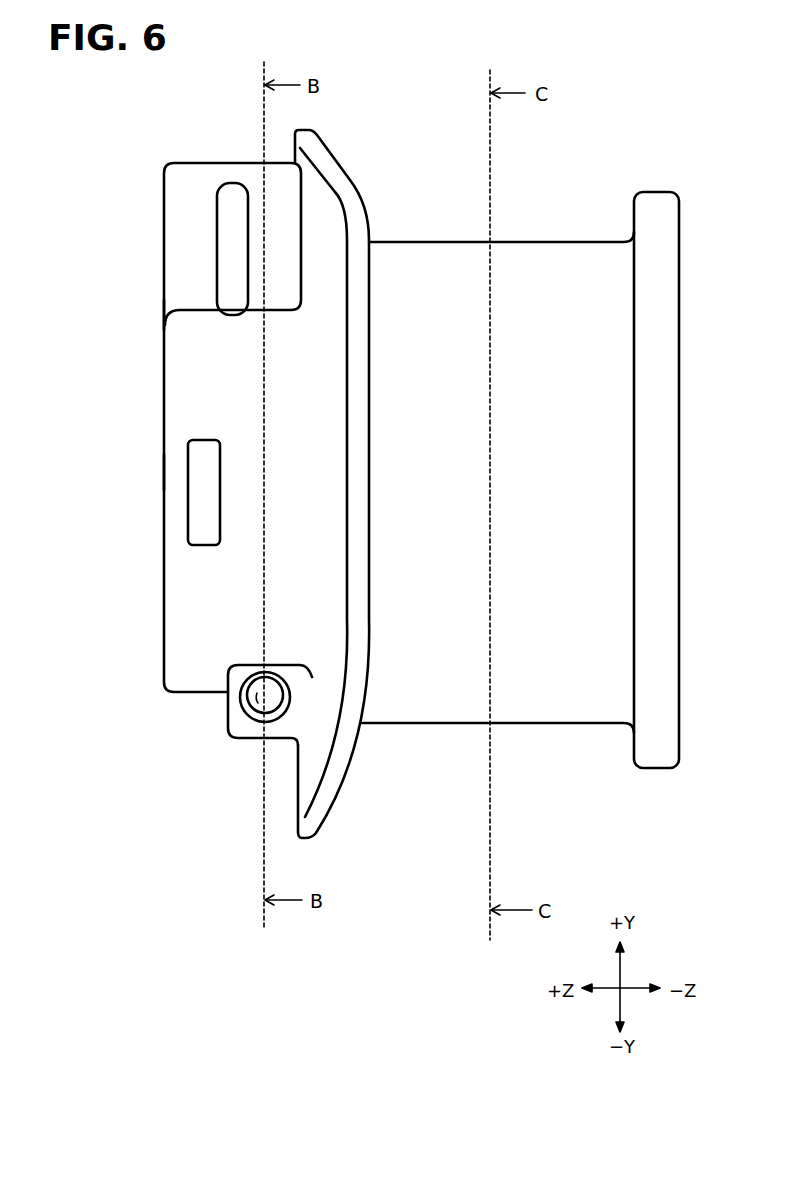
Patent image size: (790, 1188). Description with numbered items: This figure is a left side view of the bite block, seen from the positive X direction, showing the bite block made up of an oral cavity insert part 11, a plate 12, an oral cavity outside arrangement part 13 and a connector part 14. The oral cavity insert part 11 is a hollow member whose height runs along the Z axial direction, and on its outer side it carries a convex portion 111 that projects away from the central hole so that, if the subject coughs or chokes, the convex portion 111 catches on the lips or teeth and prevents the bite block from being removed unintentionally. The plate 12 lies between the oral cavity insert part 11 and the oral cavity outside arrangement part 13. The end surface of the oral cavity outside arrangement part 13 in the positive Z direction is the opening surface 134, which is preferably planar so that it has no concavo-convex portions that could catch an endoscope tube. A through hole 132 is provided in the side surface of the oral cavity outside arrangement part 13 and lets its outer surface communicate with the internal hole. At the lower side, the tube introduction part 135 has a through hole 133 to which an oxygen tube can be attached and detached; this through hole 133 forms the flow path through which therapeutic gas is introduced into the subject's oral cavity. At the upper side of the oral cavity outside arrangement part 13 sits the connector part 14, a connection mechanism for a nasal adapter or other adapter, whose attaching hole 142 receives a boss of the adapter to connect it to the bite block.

The oral cavity insert part 11 is at (675, 782).
The convex portion 111 is at (643, 203).
The plate 12 is at (345, 205).
The oral cavity outside arrangement part 13 is at (200, 408).
The through hole 132 is at (198, 517).
The through hole 133 is at (252, 720).
The opening surface 134 is at (163, 472).
The tube introduction part 135 is at (240, 720).
The connector part 14 is at (172, 192).
The attaching hole 142 is at (233, 203).